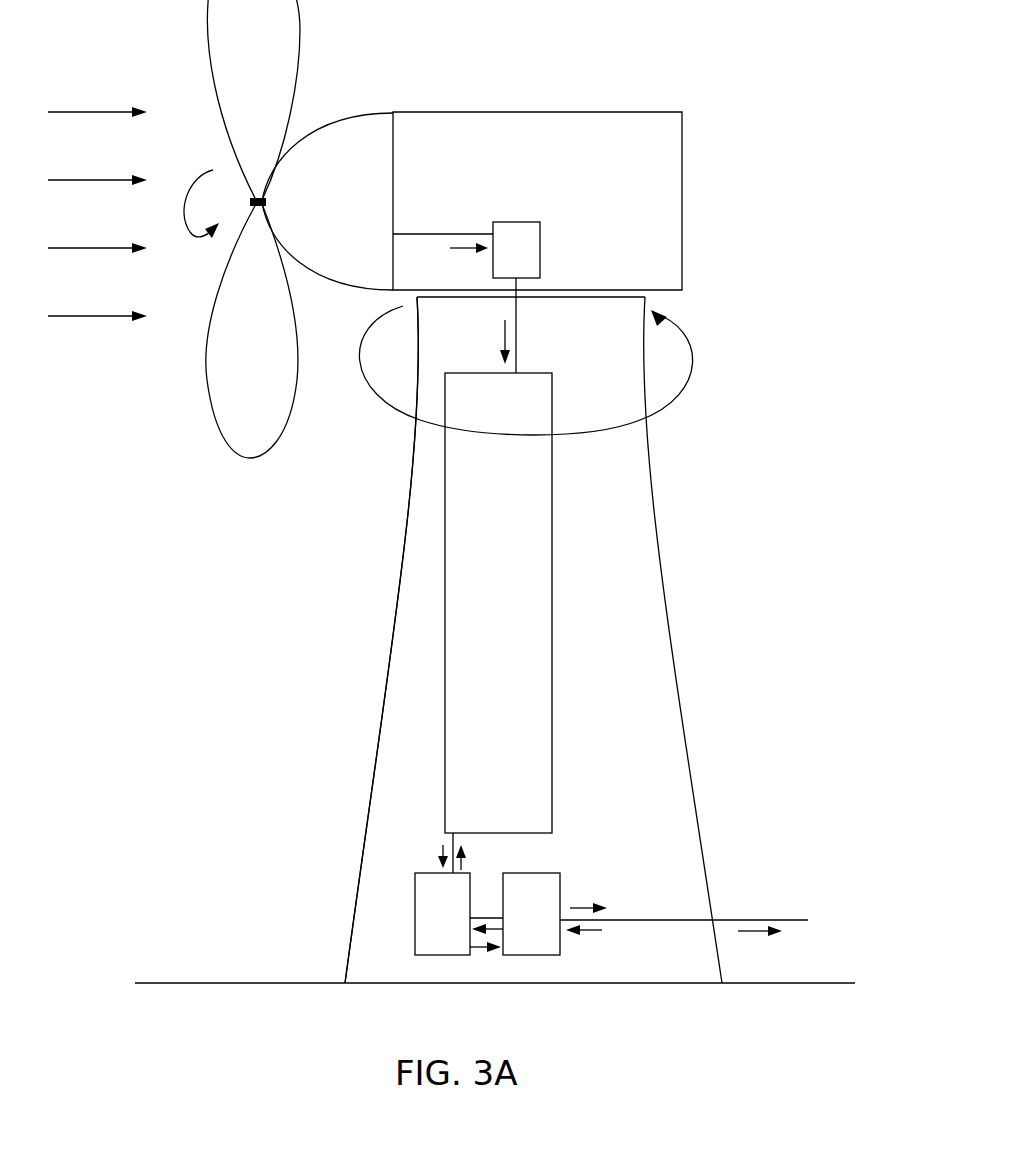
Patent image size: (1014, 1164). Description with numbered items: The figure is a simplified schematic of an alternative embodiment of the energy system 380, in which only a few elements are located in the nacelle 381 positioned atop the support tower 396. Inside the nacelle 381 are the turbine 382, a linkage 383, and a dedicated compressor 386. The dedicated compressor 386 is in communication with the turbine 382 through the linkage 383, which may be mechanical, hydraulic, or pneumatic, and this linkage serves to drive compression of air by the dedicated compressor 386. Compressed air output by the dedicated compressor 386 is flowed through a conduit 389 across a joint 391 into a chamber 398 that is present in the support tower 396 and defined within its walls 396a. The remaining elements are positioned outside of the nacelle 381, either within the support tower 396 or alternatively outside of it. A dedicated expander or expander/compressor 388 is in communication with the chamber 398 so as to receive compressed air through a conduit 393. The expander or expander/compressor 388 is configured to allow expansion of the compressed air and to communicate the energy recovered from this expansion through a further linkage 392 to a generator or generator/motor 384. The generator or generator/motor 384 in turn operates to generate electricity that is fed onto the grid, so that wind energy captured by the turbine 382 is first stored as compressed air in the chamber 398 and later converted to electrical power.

The system 380 is at (642, 50).
The nacelle 381 is at (493, 112).
The turbine 382 is at (360, 259).
The linkage 383 is at (430, 233).
The generator or generator/motor 384 is at (560, 884).
The dedicated compressor 386 is at (540, 236).
The dedicated expander or expander/compressor 388 is at (415, 925).
The conduit 389 is at (516, 322).
The joint 391 is at (646, 296).
The linkage 392 is at (478, 917).
The conduit 393 is at (447, 843).
The support tower 396 is at (384, 596).
The walls 396a is at (398, 672).
The chamber 398 is at (521, 787).